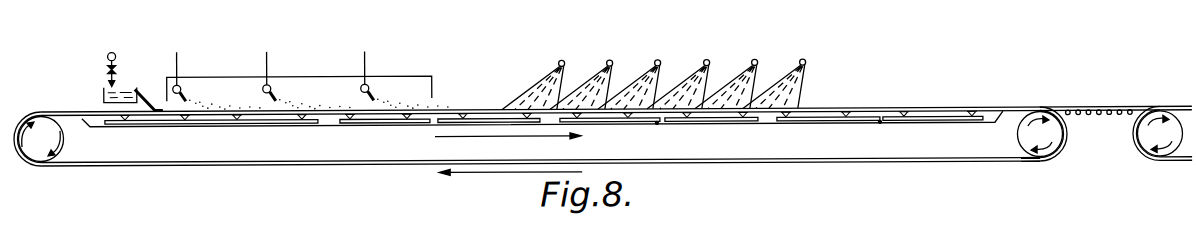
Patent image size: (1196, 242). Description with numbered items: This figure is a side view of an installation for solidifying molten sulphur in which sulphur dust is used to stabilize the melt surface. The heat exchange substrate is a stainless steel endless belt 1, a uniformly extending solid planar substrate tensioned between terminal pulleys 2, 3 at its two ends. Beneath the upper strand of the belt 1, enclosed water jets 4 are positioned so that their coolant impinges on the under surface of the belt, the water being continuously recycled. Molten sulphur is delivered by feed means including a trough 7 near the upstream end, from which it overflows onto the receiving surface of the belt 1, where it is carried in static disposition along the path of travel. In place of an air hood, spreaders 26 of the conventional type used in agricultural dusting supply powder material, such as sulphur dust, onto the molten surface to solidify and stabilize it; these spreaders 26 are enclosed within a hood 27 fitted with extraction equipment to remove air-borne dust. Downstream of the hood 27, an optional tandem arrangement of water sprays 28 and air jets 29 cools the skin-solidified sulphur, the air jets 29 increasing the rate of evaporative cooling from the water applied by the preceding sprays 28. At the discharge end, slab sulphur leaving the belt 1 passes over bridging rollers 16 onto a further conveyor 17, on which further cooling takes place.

The endless belt 1 is at (310, 162).
The terminal pulley 2 is at (58, 140).
The terminal pulley 3 is at (1018, 143).
The water jets 4 is at (260, 126).
The trough 7 is at (128, 92).
The bridging rollers 16 is at (1101, 122).
The further conveyor 17 is at (1173, 168).
The spreaders 26 is at (183, 87).
The hood 27 is at (313, 78).
The water sprays 28 is at (561, 63).
The air jets 29 is at (609, 63).